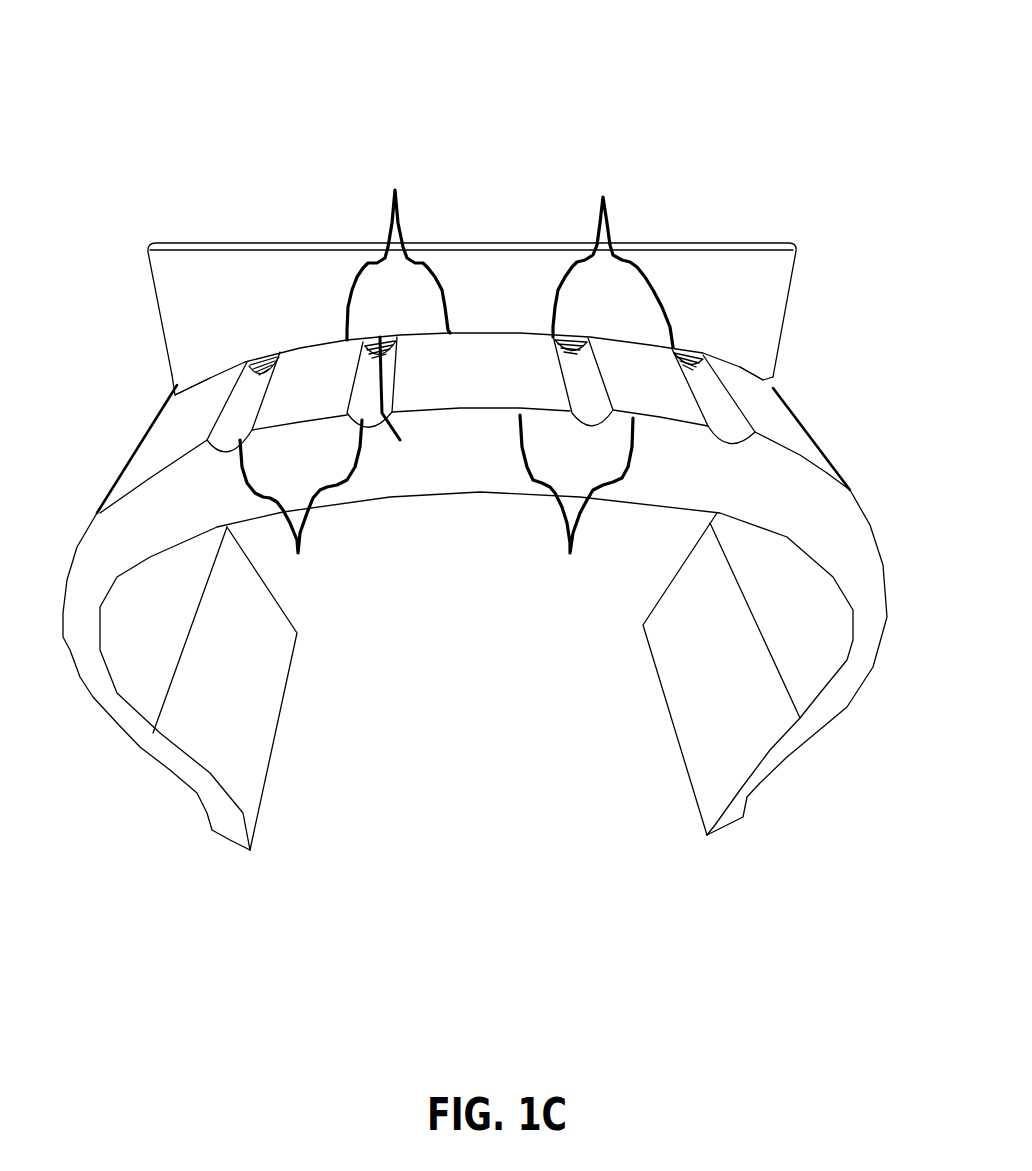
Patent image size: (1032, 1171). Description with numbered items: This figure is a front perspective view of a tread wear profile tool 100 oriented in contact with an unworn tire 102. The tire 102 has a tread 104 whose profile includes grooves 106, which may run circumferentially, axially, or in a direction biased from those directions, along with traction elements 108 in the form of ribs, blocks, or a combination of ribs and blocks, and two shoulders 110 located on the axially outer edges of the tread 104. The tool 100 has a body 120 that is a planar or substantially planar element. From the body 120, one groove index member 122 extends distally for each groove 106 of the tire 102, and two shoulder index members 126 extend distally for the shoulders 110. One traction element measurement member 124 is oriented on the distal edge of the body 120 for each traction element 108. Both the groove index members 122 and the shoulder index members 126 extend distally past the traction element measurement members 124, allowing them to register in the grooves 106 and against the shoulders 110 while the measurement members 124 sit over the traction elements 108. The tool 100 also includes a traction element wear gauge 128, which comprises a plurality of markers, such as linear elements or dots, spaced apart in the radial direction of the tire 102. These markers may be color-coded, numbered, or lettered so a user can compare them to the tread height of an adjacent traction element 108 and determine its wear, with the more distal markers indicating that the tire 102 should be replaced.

The tread wear profile tool 100 is at (474, 427).
The tire 102 is at (475, 663).
The tread 104 is at (475, 339).
The groove 106 is at (301, 505).
The traction element 108 is at (576, 502).
The shoulder 110 is at (474, 440).
The body 120 is at (472, 272).
The groove index member 122 is at (613, 257).
The traction element measurement member 124 is at (398, 250).
The shoulder index member 126 is at (474, 353).
The traction element wear gauge 128 is at (405, 446).